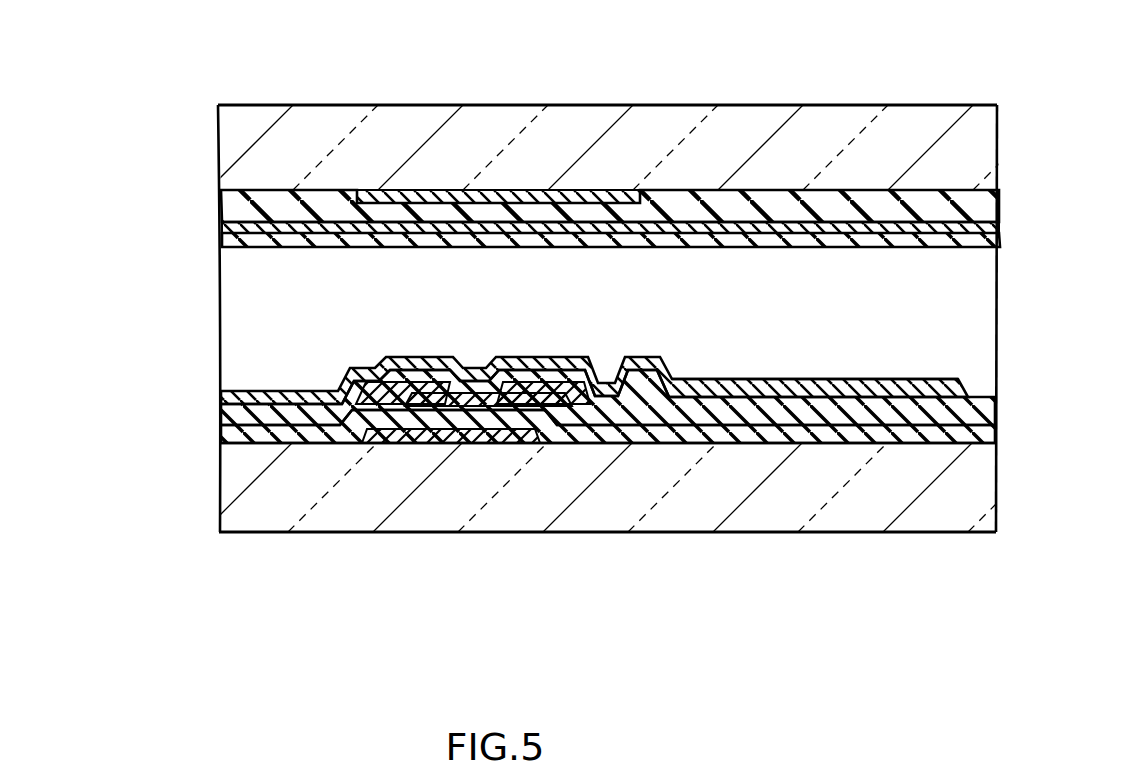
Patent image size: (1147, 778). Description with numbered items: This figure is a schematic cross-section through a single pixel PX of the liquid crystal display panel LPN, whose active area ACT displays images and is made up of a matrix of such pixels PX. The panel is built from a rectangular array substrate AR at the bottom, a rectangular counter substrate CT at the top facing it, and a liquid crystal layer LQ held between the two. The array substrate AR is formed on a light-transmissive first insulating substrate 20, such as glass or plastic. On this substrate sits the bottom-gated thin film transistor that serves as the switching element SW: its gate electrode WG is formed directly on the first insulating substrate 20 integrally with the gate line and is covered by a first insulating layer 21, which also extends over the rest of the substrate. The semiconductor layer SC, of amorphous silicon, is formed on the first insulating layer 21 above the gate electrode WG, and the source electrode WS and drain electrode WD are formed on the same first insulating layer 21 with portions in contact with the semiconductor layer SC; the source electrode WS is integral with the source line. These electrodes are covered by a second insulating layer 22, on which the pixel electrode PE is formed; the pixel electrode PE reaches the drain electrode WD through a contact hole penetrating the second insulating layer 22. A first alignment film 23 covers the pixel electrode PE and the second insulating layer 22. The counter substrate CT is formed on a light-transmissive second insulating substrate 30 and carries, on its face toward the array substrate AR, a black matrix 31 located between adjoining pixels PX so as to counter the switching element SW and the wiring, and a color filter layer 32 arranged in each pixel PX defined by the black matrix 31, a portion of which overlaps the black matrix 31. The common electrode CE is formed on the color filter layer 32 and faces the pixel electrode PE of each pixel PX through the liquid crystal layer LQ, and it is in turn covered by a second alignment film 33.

The second insulating substrate 30 is at (984, 130).
The black matrix 31 is at (483, 195).
The color filter layer 32 is at (984, 206).
The second alignment film 33 is at (984, 246).
The common electrode CE is at (704, 215).
The counter substrate CT is at (196, 106).
The liquid crystal layer LQ is at (240, 318).
The array substrate AR is at (196, 389).
The first insulating substrate 20 is at (984, 502).
The first insulating layer 21 is at (982, 440).
The second insulating layer 22 is at (982, 415).
The first alignment film 23 is at (980, 391).
The pixel electrode PE is at (776, 386).
The gate electrode WG is at (500, 446).
The source electrode WS is at (416, 370).
The drain electrode WD is at (524, 396).
The semiconductor layer SC is at (466, 392).
The switching element SW is at (464, 456).
The pixel PX is at (762, 545).
The active area ACT is at (221, 604).
The liquid crystal display panel LPN is at (1040, 80).